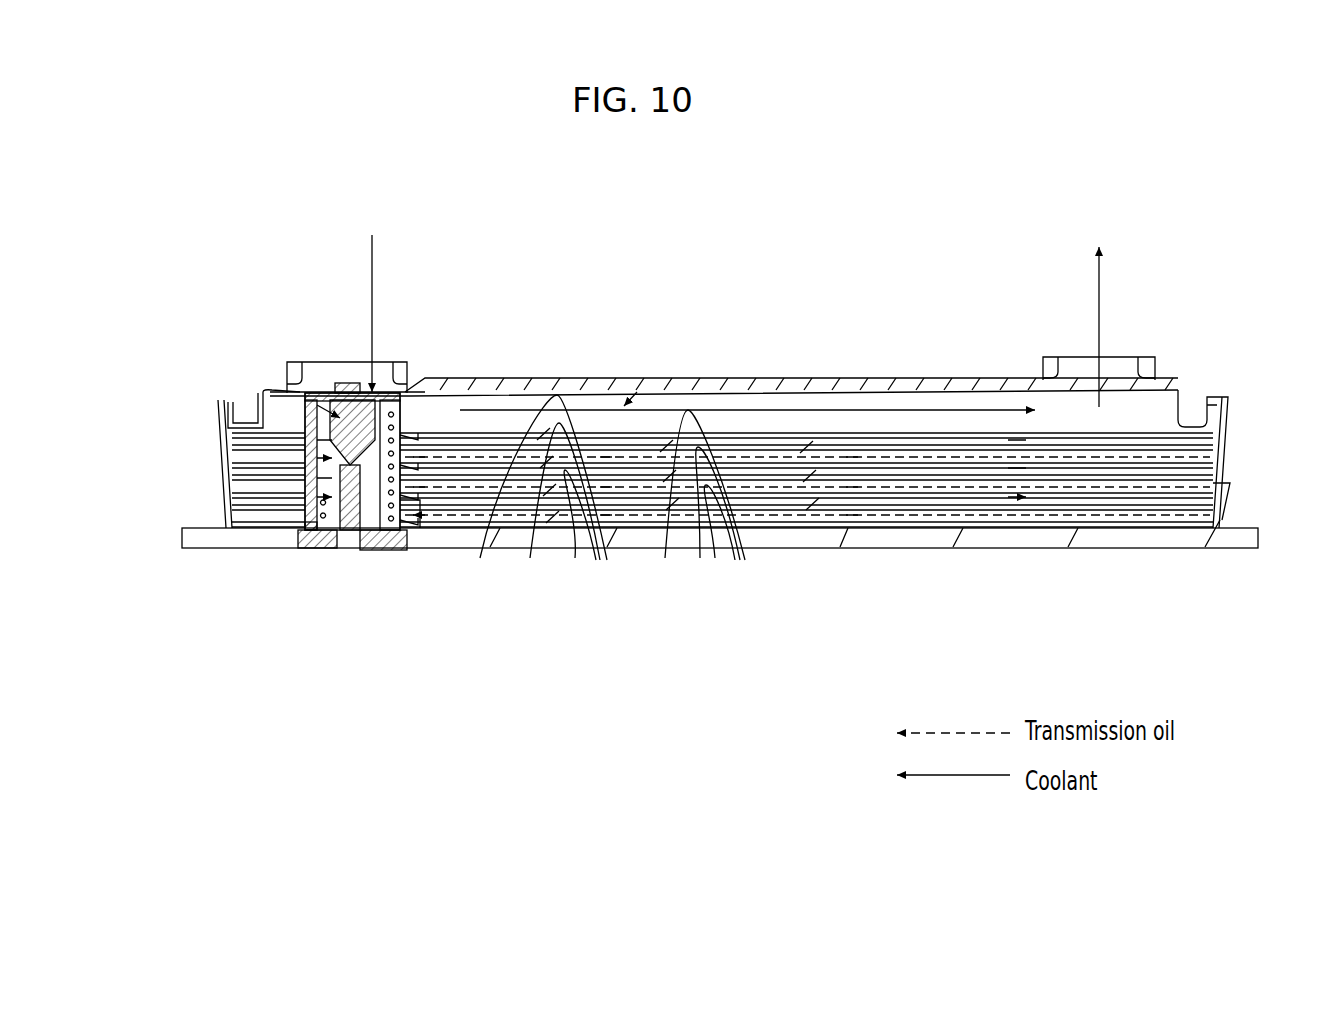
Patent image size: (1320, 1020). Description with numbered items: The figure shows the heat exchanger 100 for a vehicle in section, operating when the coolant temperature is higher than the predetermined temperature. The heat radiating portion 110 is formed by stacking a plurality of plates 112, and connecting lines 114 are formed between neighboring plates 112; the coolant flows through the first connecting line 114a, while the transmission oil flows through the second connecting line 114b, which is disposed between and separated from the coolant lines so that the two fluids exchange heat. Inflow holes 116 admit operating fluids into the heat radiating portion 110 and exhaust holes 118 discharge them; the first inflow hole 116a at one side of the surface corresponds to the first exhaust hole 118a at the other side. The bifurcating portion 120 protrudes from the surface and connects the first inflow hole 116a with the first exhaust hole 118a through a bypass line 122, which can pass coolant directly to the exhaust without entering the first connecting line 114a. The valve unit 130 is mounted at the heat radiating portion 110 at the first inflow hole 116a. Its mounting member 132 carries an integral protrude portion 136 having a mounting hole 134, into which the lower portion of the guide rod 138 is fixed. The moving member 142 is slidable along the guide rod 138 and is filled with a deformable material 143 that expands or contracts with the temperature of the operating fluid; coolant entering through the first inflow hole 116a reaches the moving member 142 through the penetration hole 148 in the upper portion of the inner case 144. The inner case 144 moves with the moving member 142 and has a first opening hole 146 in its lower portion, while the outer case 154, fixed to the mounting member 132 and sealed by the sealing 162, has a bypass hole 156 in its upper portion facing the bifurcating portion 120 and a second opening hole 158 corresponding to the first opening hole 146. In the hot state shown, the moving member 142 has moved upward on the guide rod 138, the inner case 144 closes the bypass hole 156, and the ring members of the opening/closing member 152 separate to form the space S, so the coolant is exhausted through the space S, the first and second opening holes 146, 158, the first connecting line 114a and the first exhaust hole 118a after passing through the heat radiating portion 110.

The heat exchanger 100 is at (687, 187).
The heat radiating portion 110 is at (1232, 394).
The plates 112 is at (908, 493).
The connecting lines 114 is at (768, 642).
The first connecting line 114a is at (608, 548).
The second connecting line 114b is at (735, 548).
The inflow holes 116 is at (292, 352).
The first inflow hole 116a is at (388, 360).
The exhaust holes 118 is at (1058, 350).
The first exhaust hole 118a is at (1117, 355).
The bifurcating portion 120 is at (772, 377).
The bypass line 122 is at (633, 420).
The valve unit 130 is at (347, 555).
The mounting member 132 is at (303, 537).
The mounting hole 134 is at (327, 533).
The protrude portion 136 is at (363, 543).
The guide rod 138 is at (380, 537).
The moving member 142 is at (337, 392).
The deformable material 143 is at (305, 428).
The inner case 144 is at (405, 410).
The first opening hole 146 is at (305, 468).
The penetration hole 148 is at (380, 390).
The opening/closing member 152 is at (420, 532).
The outer case 154 is at (402, 398).
The bypass hole 156 is at (303, 410).
The second opening hole 158 is at (310, 437).
The sealing 162 is at (296, 532).
The space S is at (440, 520).